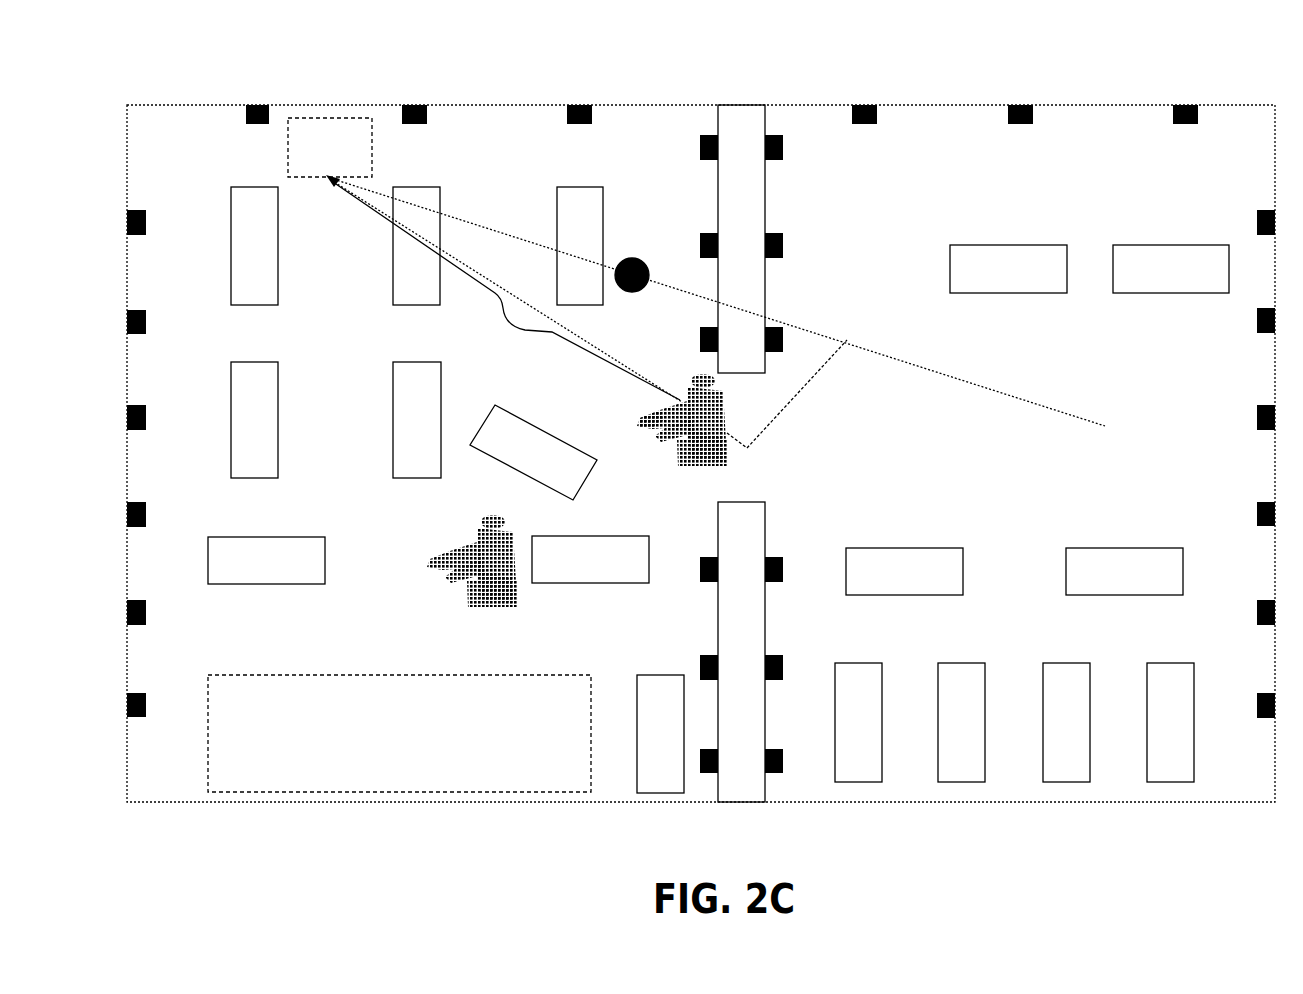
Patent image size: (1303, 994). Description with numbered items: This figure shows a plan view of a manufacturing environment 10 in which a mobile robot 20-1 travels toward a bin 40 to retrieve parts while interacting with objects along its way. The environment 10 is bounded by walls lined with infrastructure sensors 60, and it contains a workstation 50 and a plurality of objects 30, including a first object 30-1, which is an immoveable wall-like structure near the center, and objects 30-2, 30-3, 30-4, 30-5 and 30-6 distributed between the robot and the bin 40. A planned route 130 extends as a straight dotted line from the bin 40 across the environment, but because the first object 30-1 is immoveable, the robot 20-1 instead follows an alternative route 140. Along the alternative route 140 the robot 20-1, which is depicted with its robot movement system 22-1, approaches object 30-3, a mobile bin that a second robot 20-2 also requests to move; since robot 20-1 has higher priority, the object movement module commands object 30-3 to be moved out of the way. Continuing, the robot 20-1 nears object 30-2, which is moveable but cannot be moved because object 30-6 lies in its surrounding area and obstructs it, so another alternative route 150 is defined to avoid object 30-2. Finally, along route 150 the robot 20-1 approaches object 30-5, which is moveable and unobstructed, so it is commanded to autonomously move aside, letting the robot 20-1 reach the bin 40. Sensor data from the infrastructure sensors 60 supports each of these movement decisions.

The manufacturing environment 10 is at (1108, 87).
The robot 20-1 is at (692, 387).
The robot 20-2 is at (475, 538).
The robot movement system 22-1 is at (647, 413).
The objects 30 is at (1142, 245).
The first object 30-1 is at (765, 208).
The object 30-2 is at (570, 187).
The object 30-3 is at (520, 473).
The object 30-4 is at (440, 212).
The object 30-5 is at (407, 362).
The object 30-6 is at (636, 258).
The bin 40 is at (288, 141).
The workstation 50 is at (253, 675).
The infrastructure sensors 60 is at (567, 124).
The planned route 130 is at (995, 388).
The alternative route 140 is at (763, 433).
The alternative route 150 is at (532, 331).